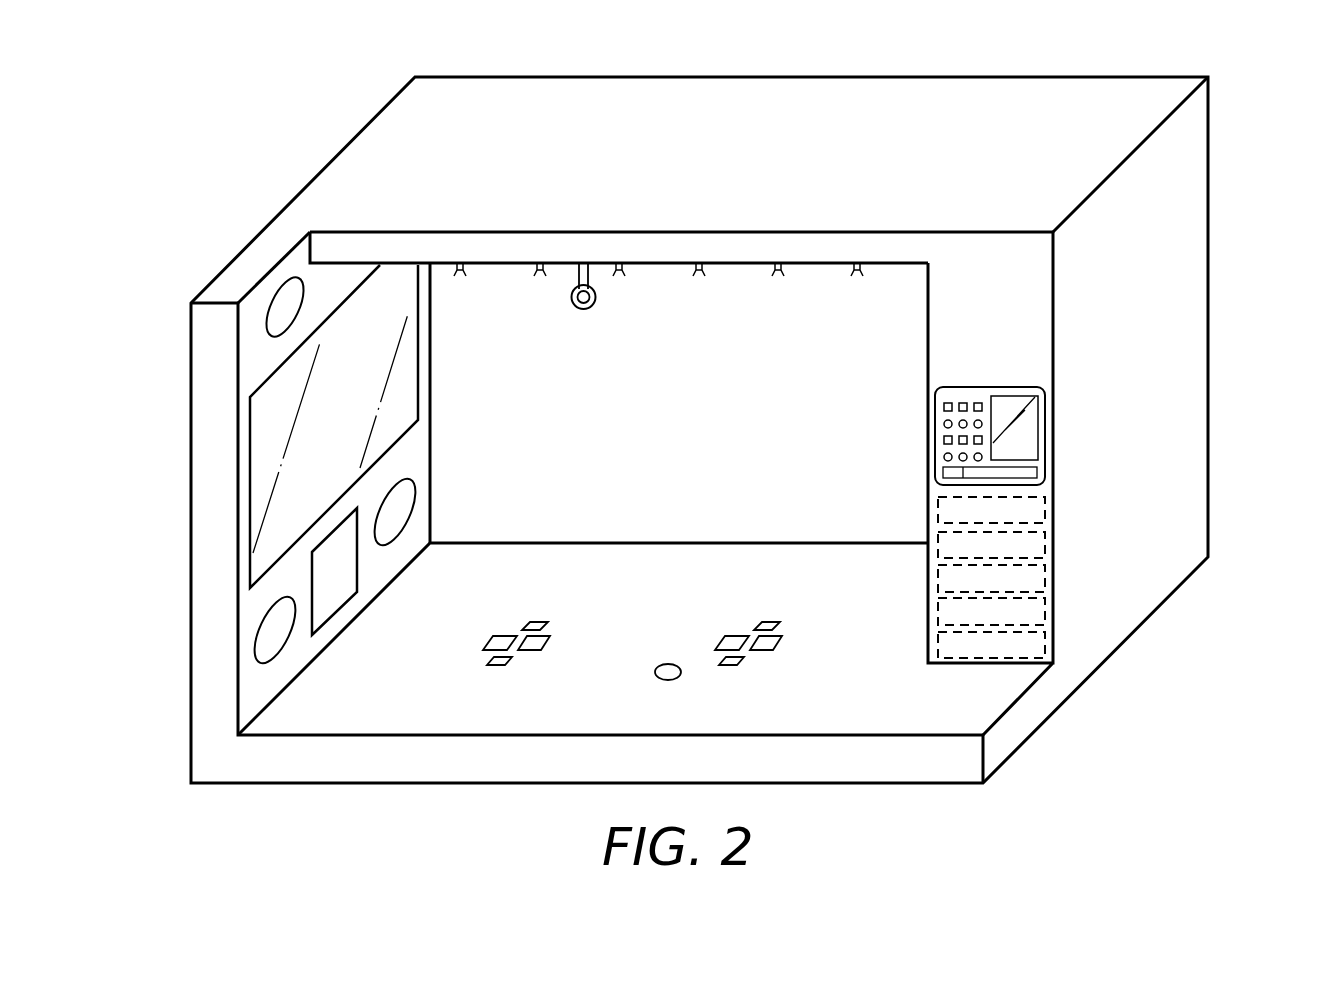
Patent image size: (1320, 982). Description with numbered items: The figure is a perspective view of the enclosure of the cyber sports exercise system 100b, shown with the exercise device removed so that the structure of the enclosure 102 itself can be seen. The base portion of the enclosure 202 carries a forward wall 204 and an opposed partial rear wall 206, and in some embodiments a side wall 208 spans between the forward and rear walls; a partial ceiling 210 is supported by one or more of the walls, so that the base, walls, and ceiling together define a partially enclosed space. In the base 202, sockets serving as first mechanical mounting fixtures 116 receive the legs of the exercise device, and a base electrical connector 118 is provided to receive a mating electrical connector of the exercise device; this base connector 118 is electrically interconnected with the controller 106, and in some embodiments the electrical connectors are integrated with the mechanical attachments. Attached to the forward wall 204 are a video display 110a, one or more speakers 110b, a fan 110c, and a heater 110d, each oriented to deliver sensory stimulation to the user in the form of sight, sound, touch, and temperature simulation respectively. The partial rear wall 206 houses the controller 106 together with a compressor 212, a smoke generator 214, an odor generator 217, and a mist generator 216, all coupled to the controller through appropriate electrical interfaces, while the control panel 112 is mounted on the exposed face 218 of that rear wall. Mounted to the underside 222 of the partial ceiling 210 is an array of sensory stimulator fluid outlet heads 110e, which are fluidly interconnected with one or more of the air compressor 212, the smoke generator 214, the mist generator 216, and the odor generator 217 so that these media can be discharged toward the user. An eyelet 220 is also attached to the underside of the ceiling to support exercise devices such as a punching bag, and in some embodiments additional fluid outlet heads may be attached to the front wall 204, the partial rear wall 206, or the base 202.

The cyber sports exercise system 100b is at (250, 205).
The enclosure housing 102 is at (1208, 222).
The controller 106 is at (1040, 498).
The video display 110a is at (258, 423).
The speakers 110b is at (260, 654).
The fan 110c is at (348, 578).
The heater 110d is at (271, 318).
The sensory stimulator fluid outlet heads 110e is at (538, 274).
The control panel 112 is at (1055, 398).
The first mechanical mounting fixtures 116 is at (513, 633).
The base electrical connector 118 is at (657, 667).
The base portion of the enclosure 202 is at (987, 707).
The forward wall 204 is at (213, 568).
The partial rear wall 206 is at (928, 322).
The side wall 208 is at (513, 468).
The partial ceiling 210 is at (503, 104).
The compressor 212 is at (1040, 535).
The smoke generator 214 is at (1040, 575).
The mist generator 216 is at (1045, 648).
The odor generator 217 is at (1045, 610).
The exposed face 218 is at (967, 363).
The eyelet 220 is at (600, 288).
The underside 222 is at (835, 272).